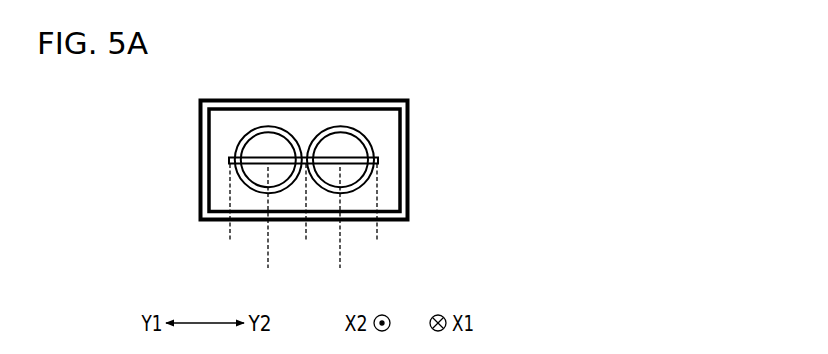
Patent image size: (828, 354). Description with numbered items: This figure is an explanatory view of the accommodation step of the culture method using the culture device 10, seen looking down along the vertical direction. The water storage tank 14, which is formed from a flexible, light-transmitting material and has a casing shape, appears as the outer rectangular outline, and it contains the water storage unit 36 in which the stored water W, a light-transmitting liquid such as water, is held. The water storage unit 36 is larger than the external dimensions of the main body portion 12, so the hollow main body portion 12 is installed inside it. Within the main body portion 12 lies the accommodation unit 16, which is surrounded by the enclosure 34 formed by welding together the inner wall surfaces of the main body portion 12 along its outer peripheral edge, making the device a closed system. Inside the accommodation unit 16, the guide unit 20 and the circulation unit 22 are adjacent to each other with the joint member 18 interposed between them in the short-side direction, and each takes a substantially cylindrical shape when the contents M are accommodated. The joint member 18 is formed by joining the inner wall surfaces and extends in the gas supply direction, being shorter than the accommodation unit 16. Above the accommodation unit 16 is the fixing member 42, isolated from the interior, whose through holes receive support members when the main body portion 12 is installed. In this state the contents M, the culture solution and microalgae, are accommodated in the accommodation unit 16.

The culture device 10 is at (353, 160).
The main body portion 12 is at (369, 143).
The water storage tank 14 is at (409, 172).
The accommodation unit 16 is at (304, 108).
The joint member 18 is at (307, 216).
The guide unit 20 is at (267, 153).
The circulation unit 22 is at (340, 125).
The enclosure 34 is at (302, 216).
The water storage unit 36 is at (224, 193).
The fixing member 42 is at (229, 160).
The stored water W is at (228, 134).
The contents M is at (305, 230).